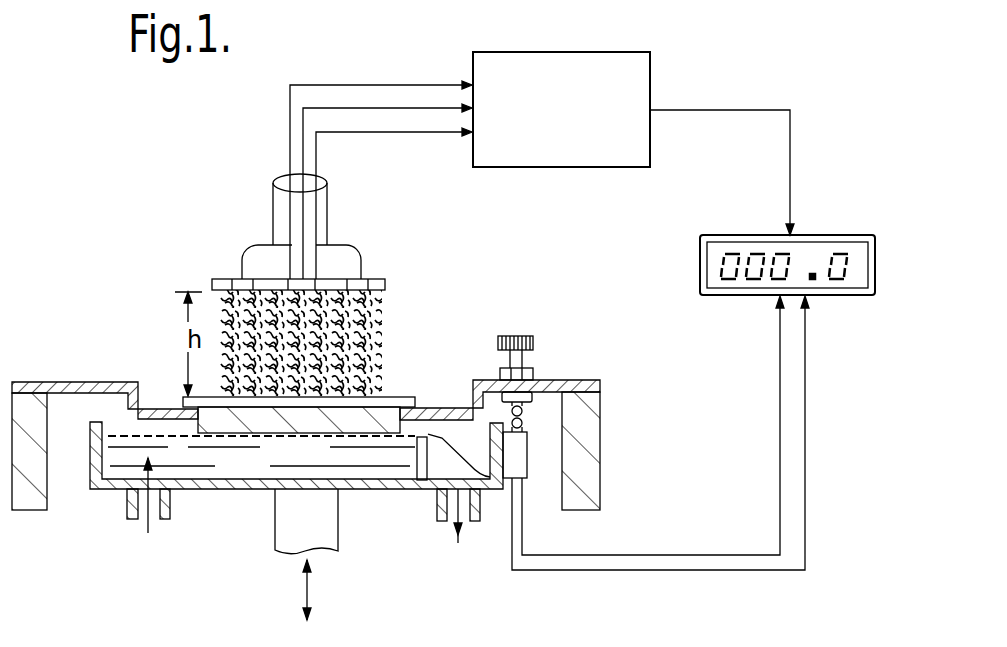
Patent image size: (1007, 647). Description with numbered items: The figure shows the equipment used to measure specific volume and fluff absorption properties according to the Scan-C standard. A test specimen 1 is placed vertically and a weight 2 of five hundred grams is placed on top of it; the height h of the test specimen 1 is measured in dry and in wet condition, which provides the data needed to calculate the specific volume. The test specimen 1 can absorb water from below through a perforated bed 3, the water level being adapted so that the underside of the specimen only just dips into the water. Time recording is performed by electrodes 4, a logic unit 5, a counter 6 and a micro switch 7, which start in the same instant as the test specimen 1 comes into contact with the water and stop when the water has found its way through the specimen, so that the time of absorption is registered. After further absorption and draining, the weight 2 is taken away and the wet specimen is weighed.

The test specimen 1 is at (380, 333).
The weight 2 is at (385, 286).
The perforated bed 3 is at (378, 417).
The electrodes 4 is at (358, 278).
The logic unit 5 is at (583, 58).
The counter 6 is at (820, 237).
The micro switch 7 is at (520, 448).